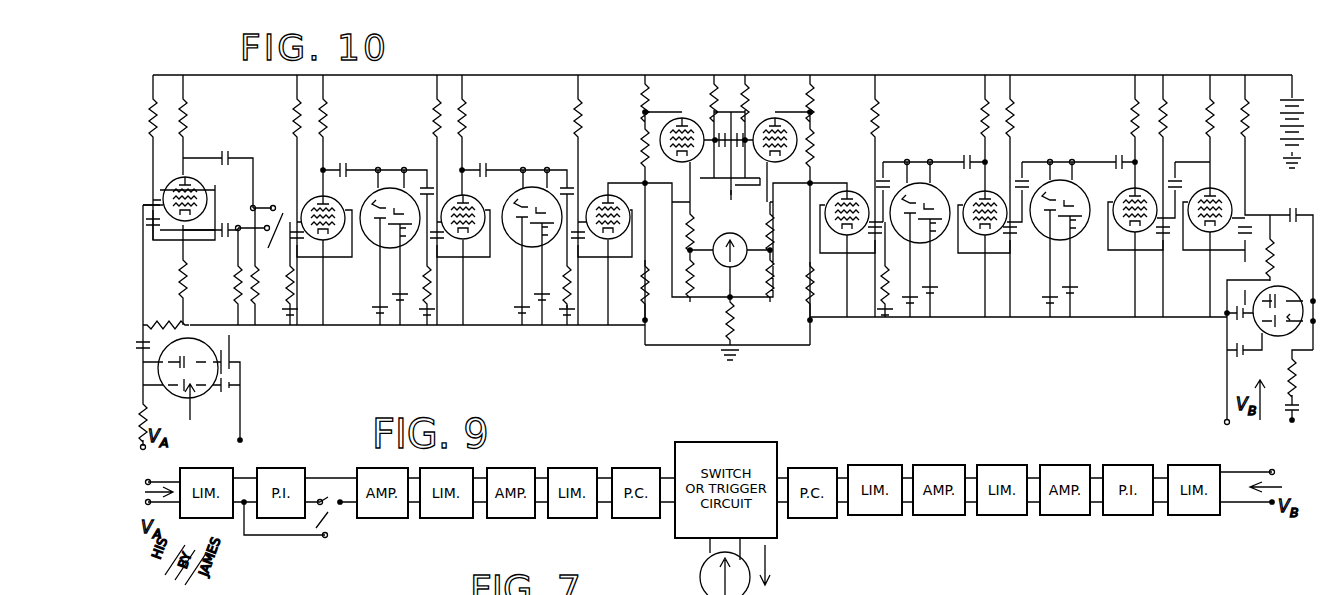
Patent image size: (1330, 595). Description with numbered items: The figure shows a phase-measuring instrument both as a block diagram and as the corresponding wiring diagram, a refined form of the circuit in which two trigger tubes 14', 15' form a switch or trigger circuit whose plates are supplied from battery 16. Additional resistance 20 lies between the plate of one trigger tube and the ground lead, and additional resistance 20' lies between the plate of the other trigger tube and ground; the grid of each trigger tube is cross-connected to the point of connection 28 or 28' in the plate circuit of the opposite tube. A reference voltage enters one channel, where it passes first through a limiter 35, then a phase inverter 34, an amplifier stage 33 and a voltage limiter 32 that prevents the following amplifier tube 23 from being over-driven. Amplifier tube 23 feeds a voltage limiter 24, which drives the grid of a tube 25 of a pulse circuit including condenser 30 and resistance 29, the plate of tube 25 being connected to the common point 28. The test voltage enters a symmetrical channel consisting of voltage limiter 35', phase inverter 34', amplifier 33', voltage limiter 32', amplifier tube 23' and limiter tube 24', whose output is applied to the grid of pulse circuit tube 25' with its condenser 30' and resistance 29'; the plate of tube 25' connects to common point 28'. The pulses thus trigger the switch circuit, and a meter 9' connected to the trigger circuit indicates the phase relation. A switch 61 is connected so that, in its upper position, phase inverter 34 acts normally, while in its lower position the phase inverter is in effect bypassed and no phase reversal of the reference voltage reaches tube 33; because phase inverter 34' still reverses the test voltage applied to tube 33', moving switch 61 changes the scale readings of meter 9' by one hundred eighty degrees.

In FIG. 10, the meter 9' is at (730, 266).
In FIG. 9, the meter 9' is at (725, 566).
In FIG. 10, the switching or trigger tube 14' is at (679, 145).
In FIG. 10, the switching or trigger tube 15' is at (778, 143).
In FIG. 10, the battery 16 is at (1272, 113).
In FIG. 10, the additional resistance 20 is at (635, 291).
In FIG. 10, the additional resistance 20' is at (798, 292).
In FIG. 10, the amplifier tube 23 is at (460, 243).
In FIG. 10, the amplifier tube 23' is at (983, 243).
In FIG. 10, the voltage limiter 24 is at (522, 247).
In FIG. 10, the limiter tube 24' is at (920, 239).
In FIG. 10, the pulse circuit tube 25 is at (609, 242).
In FIG. 10, the pulse circuit tube 25' is at (846, 234).
In FIG. 10, the point of connection 28 is at (687, 242).
In FIG. 10, the point of connection 28' is at (771, 241).
In FIG. 10, the resistance 29 is at (576, 288).
In FIG. 10, the resistance 29' is at (874, 269).
In FIG. 10, the condenser 30 is at (517, 232).
In FIG. 10, the condenser 30' is at (931, 174).
In FIG. 10, the voltage limiter 32 is at (378, 232).
In FIG. 10, the voltage limiter 32' is at (1067, 240).
In FIG. 10, the amplifier stage 33 is at (317, 248).
In FIG. 10, the amplifier 33' is at (1159, 239).
In FIG. 10, the phase inverter 34 is at (179, 192).
In FIG. 10, the phase inverter 34' is at (1228, 240).
In FIG. 10, the limiter 35 is at (194, 380).
In FIG. 10, the voltage limiter 35' is at (1270, 320).
In FIG. 10, the switch 61 is at (233, 266).
In FIG. 9, the switch 61 is at (332, 535).